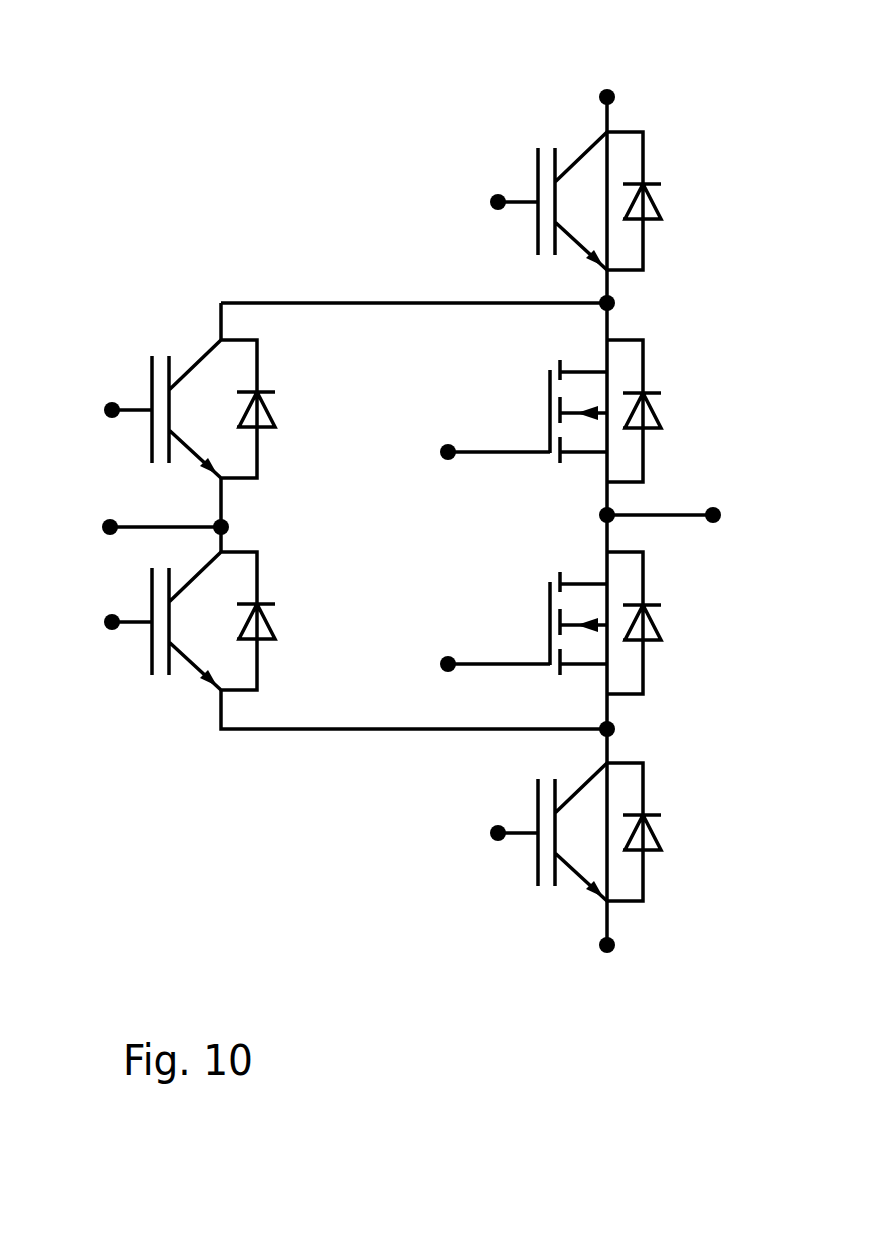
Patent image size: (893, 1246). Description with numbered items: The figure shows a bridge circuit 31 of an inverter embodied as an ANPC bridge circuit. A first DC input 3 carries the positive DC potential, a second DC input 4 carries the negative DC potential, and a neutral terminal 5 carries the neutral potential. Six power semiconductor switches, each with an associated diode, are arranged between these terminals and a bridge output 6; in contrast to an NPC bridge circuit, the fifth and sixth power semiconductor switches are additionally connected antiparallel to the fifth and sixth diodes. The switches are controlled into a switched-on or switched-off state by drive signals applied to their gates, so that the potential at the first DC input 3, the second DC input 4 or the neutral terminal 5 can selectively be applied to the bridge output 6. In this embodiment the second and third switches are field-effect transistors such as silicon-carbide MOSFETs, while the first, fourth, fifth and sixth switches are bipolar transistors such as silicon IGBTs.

The bridge circuit 31 is at (410, 543).
The first DC input 3 is at (604, 86).
The second DC input 4 is at (605, 956).
The neutral terminal 5 is at (105, 515).
The bridge output 6 is at (718, 507).